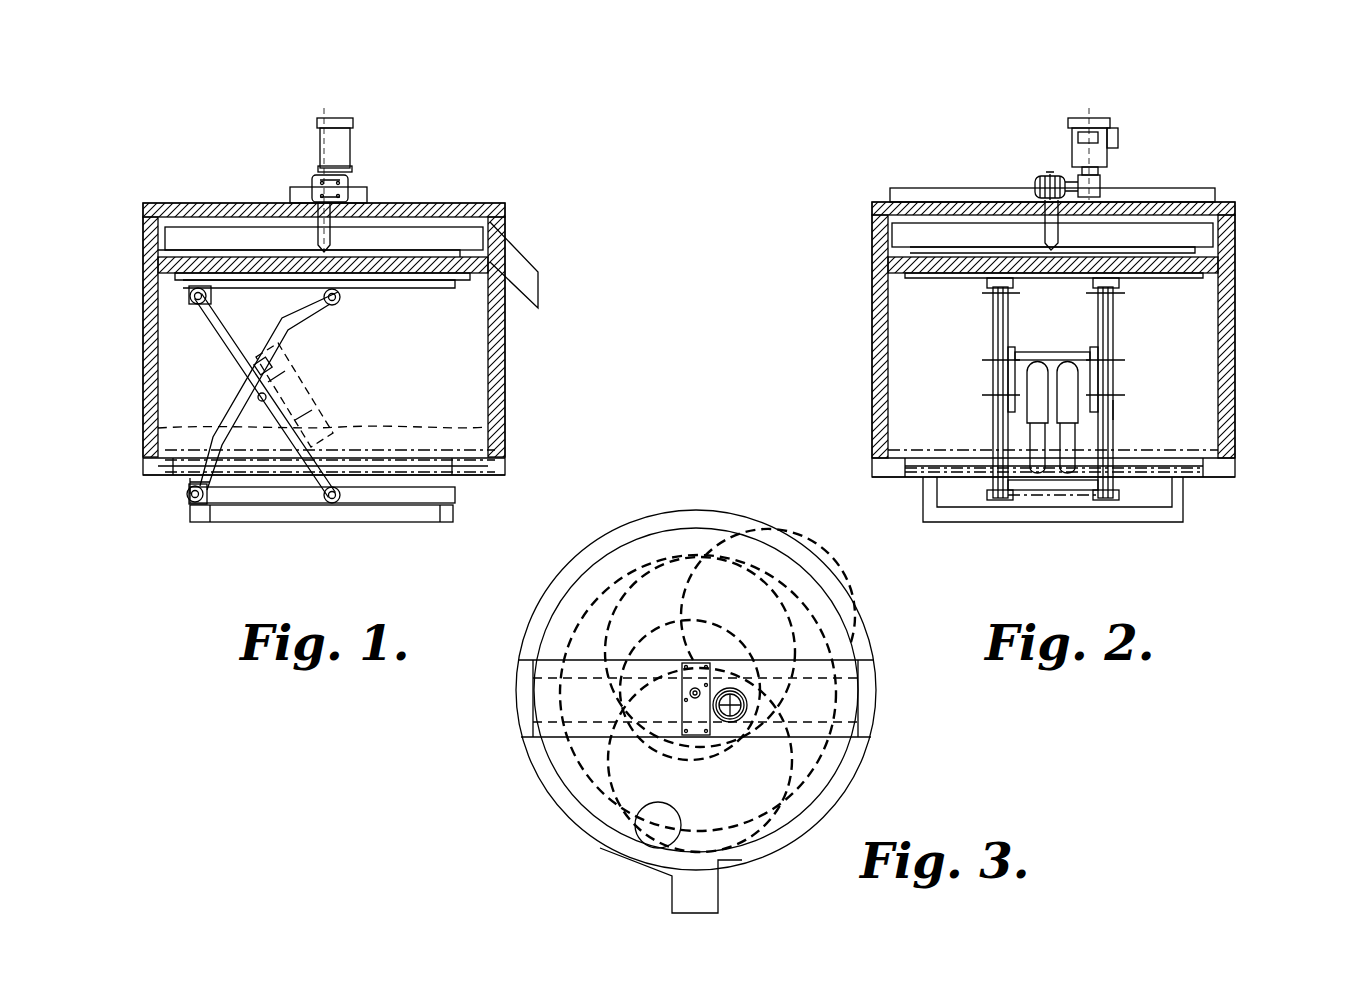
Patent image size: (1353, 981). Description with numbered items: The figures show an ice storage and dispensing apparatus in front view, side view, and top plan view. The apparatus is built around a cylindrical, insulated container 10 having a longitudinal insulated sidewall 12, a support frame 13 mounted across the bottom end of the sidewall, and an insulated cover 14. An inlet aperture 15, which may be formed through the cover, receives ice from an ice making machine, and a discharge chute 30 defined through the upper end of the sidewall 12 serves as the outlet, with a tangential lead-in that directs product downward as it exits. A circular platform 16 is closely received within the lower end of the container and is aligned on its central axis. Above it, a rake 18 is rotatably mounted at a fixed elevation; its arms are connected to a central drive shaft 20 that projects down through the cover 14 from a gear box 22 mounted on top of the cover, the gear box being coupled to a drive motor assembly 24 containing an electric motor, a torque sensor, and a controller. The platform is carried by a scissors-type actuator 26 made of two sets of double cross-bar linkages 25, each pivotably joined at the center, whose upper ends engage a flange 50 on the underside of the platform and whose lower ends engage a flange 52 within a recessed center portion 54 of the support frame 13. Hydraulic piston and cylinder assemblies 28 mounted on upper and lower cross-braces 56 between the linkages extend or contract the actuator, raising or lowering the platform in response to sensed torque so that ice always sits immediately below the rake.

In FIG. 1, the container 10 is at (494, 184).
In FIG. 2, the container 10 is at (1260, 178).
In FIG. 3, the container 10 is at (892, 637).
In FIG. 1, the sidewall 12 is at (505, 412).
In FIG. 2, the sidewall 12 is at (1235, 295).
In FIG. 1, the support frame 13 is at (490, 468).
In FIG. 2, the support frame 13 is at (1228, 470).
In FIG. 1, the cover 14 is at (189, 204).
In FIG. 2, the cover 14 is at (876, 202).
In FIG. 3, the inlet aperture 15 is at (645, 846).
In FIG. 1, the platform 16 is at (143, 270).
In FIG. 2, the platform 16 is at (890, 270).
In FIG. 1, the rake 18 is at (388, 226).
In FIG. 2, the rake 18 is at (1178, 226).
In FIG. 1, the central drive shaft 20 is at (320, 240).
In FIG. 2, the central drive shaft 20 is at (1043, 222).
In FIG. 2, the gear box 22 is at (1040, 178).
In FIG. 1, the drive motor assembly 24 is at (349, 118).
In FIG. 2, the drive motor assembly 24 is at (1098, 118).
In FIG. 1, the double cross-bar linkages 25 is at (235, 345).
In FIG. 2, the double cross-bar linkages 25 is at (1113, 380).
In FIG. 1, the scissors-type actuator 26 is at (182, 484).
In FIG. 2, the scissors-type actuator 26 is at (1115, 410).
In FIG. 1, the hydraulic piston and cylinder assemblies 28 is at (505, 430).
In FIG. 2, the hydraulic piston and cylinder assemblies 28 is at (1075, 438).
In FIG. 1, the discharge chute 30 is at (520, 258).
In FIG. 3, the discharge chute 30 is at (713, 898).
In FIG. 1, the flange 50 is at (455, 290).
In FIG. 1, the flange 52 is at (393, 500).
In FIG. 1, the recessed center portion 54 is at (290, 512).
In FIG. 2, the recessed center portion 54 is at (1152, 518).
In FIG. 2, the cross-braces 56 is at (1045, 355).